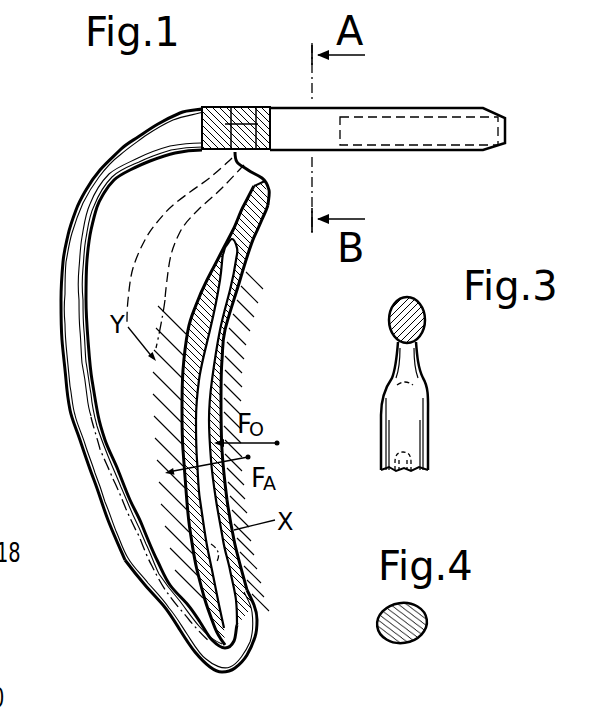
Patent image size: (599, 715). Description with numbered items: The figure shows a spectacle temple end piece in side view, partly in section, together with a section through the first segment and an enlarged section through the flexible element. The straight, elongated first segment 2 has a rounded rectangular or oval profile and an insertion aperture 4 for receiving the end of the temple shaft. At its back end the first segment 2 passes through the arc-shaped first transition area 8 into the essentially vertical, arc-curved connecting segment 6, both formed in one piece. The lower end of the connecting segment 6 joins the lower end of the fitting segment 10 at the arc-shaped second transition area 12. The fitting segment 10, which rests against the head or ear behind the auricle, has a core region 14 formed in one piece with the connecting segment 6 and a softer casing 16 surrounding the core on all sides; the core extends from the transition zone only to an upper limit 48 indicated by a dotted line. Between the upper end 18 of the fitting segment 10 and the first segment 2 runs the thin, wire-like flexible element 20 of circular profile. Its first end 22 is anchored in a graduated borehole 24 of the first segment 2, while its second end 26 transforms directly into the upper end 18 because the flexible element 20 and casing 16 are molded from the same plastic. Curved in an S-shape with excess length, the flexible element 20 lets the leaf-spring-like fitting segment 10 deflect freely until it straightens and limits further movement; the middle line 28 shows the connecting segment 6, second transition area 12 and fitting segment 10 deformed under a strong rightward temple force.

In FIG. 1, the first segment 2 is at (322, 112).
In FIG. 3, the first segment 2 is at (411, 301).
In FIG. 1, the insertion aperture 4 is at (382, 138).
In FIG. 1, the connecting segment 6 is at (56, 358).
In FIG. 1, the first transition area 8 is at (131, 150).
In FIG. 1, the fitting segment 10 is at (241, 379).
In FIG. 1, the second transition area 12 is at (243, 652).
In FIG. 1, the core region 14 is at (246, 586).
In FIG. 3, the core region 14 is at (403, 473).
In FIG. 1, the casing 16 is at (230, 318).
In FIG. 3, the casing 16 is at (419, 440).
In FIG. 1, the upper end 18 is at (248, 275).
In FIG. 3, the upper end 18 is at (379, 405).
In FIG. 1, the flexible element 20 is at (196, 192).
In FIG. 3, the flexible element 20 is at (424, 361).
In FIG. 4, the flexible element 20 is at (422, 622).
In FIG. 1, the first end 22 is at (253, 157).
In FIG. 1, the graduated borehole 24 is at (237, 108).
In FIG. 1, the second end 26 is at (263, 200).
In FIG. 1, the middle line 28 is at (162, 634).
In FIG. 1, the upper limit 48 is at (234, 556).